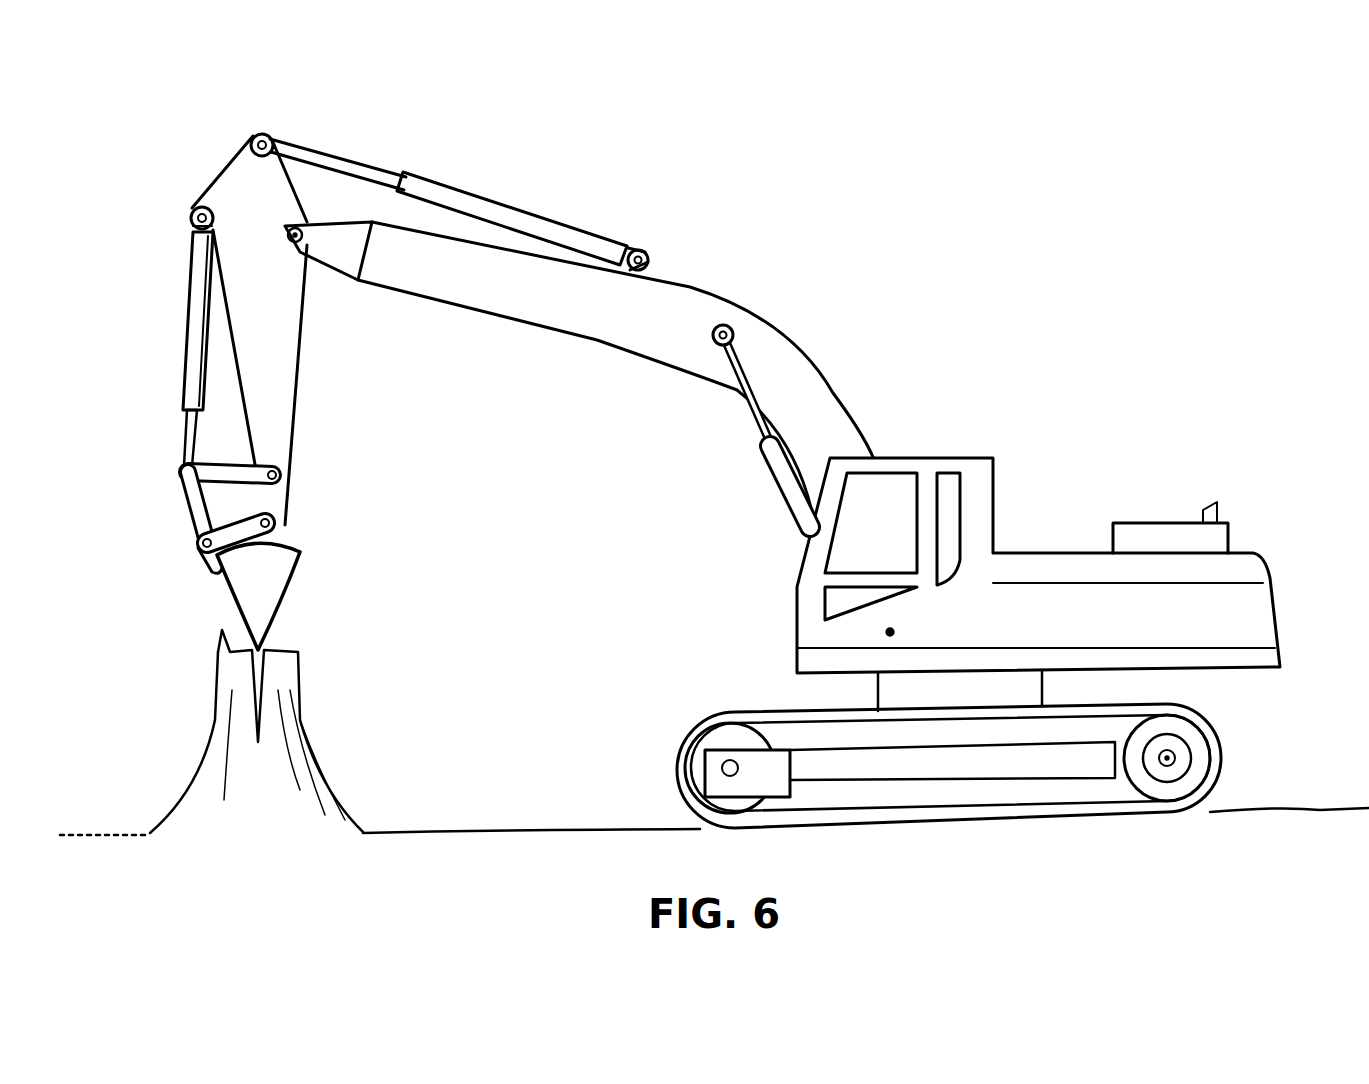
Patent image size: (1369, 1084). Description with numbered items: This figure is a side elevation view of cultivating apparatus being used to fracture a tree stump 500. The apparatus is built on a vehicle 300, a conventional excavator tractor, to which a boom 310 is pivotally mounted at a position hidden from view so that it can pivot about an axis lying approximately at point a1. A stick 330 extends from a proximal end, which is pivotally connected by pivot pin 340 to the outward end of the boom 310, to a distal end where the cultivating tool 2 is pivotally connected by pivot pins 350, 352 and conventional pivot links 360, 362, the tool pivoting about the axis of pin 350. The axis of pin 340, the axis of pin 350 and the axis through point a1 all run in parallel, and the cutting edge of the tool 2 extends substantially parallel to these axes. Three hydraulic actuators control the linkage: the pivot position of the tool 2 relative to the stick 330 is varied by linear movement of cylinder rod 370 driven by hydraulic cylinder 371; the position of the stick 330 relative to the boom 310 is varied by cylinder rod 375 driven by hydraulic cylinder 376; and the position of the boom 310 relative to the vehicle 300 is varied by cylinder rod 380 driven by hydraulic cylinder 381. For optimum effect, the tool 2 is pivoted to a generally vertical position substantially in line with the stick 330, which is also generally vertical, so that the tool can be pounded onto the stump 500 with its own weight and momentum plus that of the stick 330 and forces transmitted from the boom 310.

The vehicle 300 is at (1062, 483).
The boom 310 is at (805, 370).
The stick 330 is at (278, 388).
The pivot pin 340 is at (283, 252).
The pivot pin 350 is at (282, 522).
The pivot pin 352 is at (281, 476).
The pivot link 360 is at (235, 506).
The pivot link 362 is at (200, 514).
The cylinder rod 370 is at (186, 432).
The hydraulic cylinder 371 is at (190, 316).
The cylinder rod 375 is at (345, 168).
The hydraulic cylinder 376 is at (500, 213).
The cylinder rod 380 is at (757, 414).
The hydraulic cylinder 381 is at (780, 483).
The cultivating tool 2 is at (238, 600).
The tree stump 500 is at (288, 684).
The point a1 is at (886, 632).